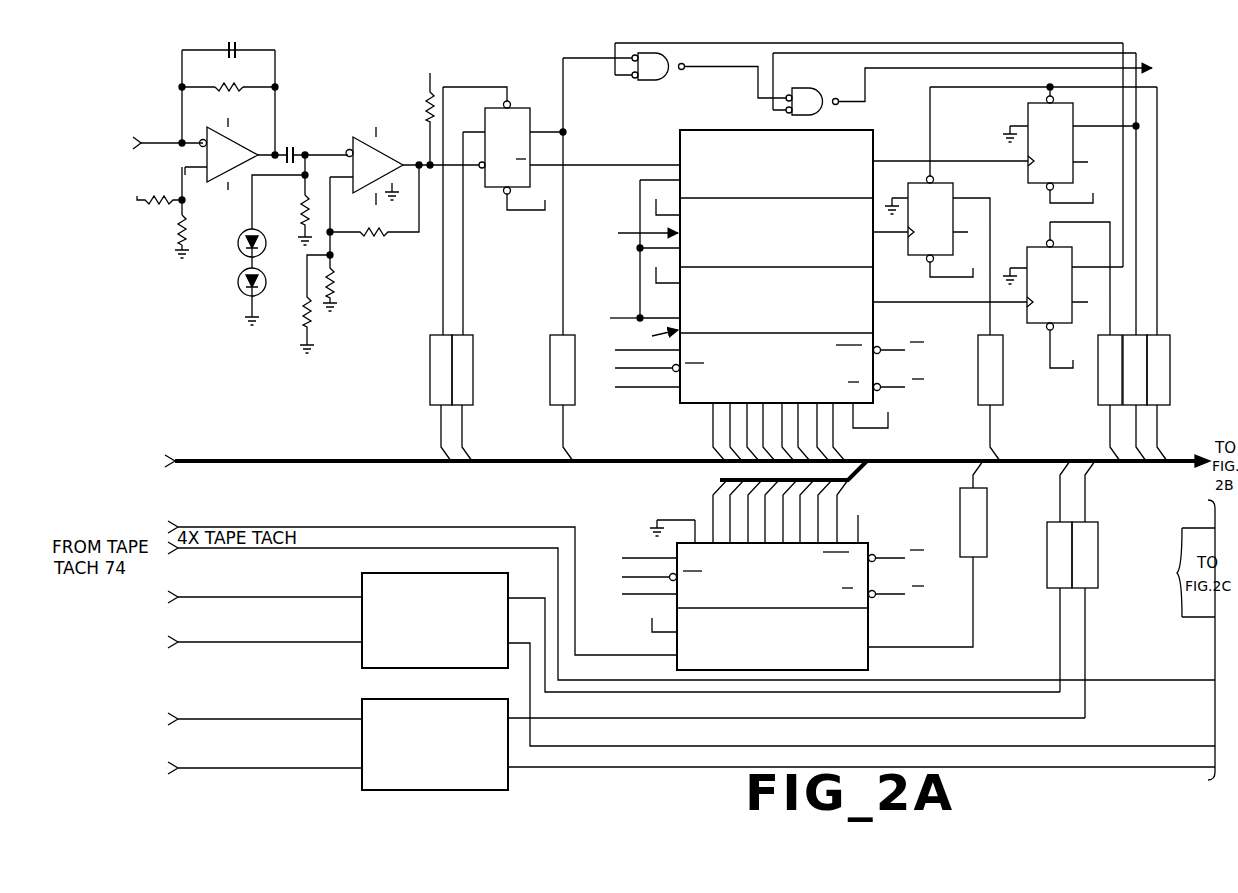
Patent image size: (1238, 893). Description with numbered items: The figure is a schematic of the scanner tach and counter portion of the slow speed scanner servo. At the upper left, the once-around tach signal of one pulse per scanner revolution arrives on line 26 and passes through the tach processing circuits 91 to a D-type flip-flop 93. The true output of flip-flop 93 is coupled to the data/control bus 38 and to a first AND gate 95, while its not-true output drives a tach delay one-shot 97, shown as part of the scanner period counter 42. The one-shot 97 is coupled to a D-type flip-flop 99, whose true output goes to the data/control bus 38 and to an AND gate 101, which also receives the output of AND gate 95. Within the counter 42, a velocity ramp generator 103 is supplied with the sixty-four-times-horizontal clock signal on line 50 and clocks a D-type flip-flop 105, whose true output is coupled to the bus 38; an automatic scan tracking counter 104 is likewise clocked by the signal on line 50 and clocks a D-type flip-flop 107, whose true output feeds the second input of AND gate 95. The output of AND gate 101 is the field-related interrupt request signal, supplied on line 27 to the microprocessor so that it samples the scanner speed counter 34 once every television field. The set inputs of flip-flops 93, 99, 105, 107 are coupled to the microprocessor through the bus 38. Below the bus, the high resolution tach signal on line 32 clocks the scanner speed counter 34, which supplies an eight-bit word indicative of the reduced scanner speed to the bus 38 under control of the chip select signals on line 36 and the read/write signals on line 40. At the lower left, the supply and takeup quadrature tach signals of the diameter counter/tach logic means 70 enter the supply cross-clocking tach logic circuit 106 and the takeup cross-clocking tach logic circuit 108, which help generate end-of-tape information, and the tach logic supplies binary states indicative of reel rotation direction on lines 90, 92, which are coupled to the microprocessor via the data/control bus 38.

The line 26 is at (162, 146).
The tach processing circuits 91 is at (303, 123).
The D-type flip-flop 93 is at (523, 104).
The first AND gate 95 is at (678, 80).
The AND gate 101 is at (807, 88).
The tach delay one-shot 97 is at (862, 127).
The D-type flip-flop 99 is at (1026, 108).
The line 27 is at (1145, 72).
The D-type flip-flop 105 is at (939, 178).
The D-type flip-flop 107 is at (1042, 244).
The scanner period counter 42 is at (878, 262).
The line 40 is at (879, 390).
The velocity ramp generator 103 is at (629, 235).
The line 50 is at (632, 316).
The automatic scan tracking (AST) counter 104 is at (648, 336).
The line 36 is at (640, 352).
The line 32 is at (198, 527).
The diameter counter/tach logic means 70 is at (338, 668).
The takeup cross-clocking tach logic circuit 108 is at (442, 670).
The supply cross-clocking tach logic circuit 106 is at (360, 787).
The scanner speed counter 34 is at (874, 603).
The data/control bus 38 is at (1117, 466).
The line 90 is at (1060, 652).
The line 92 is at (1085, 655).